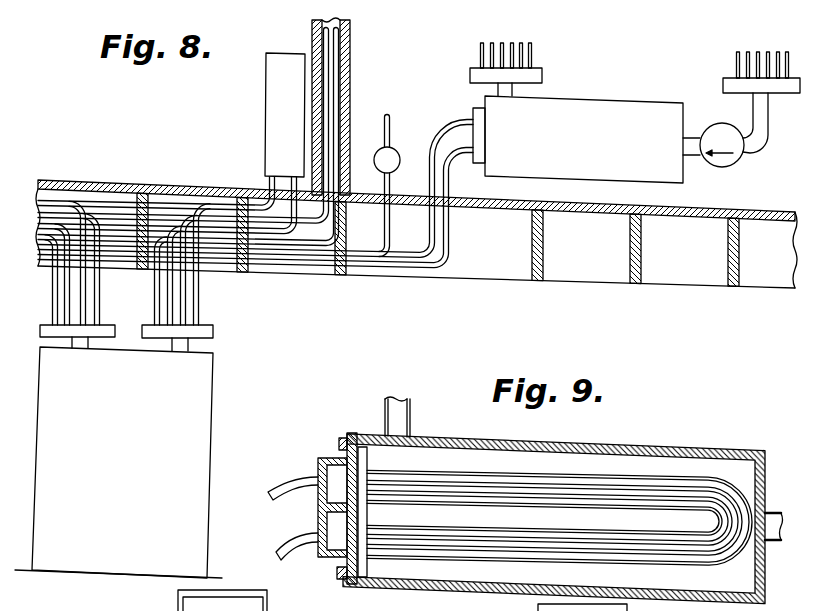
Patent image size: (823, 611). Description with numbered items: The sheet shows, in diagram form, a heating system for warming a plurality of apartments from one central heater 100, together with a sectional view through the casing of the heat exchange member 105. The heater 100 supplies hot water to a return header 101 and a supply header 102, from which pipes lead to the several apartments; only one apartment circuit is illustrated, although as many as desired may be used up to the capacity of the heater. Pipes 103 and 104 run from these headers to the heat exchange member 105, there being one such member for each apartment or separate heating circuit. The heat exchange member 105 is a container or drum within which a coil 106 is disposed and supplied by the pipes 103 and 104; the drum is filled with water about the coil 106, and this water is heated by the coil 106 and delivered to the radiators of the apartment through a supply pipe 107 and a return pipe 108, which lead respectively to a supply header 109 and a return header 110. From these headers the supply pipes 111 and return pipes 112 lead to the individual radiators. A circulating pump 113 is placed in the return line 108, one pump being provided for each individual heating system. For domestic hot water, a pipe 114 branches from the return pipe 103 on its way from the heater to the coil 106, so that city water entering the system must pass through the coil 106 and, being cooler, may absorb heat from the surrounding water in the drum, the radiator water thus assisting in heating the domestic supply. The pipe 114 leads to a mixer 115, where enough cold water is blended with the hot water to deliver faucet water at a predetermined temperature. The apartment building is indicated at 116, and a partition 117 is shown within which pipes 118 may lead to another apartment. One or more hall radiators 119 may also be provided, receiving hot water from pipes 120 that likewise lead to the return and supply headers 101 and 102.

In FIG. 8, the heater 100 is at (200, 412).
In FIG. 8, the return header 101 is at (42, 325).
In FIG. 8, the supply header 102 is at (213, 333).
In FIG. 8, the return pipe 103 is at (428, 240).
In FIG. 9, the return pipe 103 is at (282, 487).
In FIG. 8, the pipe 104 is at (205, 297).
In FIG. 9, the pipe 104 is at (280, 550).
In FIG. 8, the heat exchange member 105 is at (580, 146).
In FIG. 9, the heat exchange member 105 is at (615, 449).
In FIG. 9, the coil 106 is at (470, 472).
In FIG. 8, the supply pipe 107 is at (498, 89).
In FIG. 9, the supply pipe 107 is at (395, 406).
In FIG. 8, the return pipe 108 is at (768, 116).
In FIG. 9, the return pipe 108 is at (773, 511).
In FIG. 8, the supply header 109 is at (472, 73).
In FIG. 8, the return header 110 is at (724, 85).
In FIG. 8, the supply pipes 111 is at (532, 52).
In FIG. 8, the return pipes 112 is at (737, 63).
In FIG. 8, the circulating pump 113 is at (728, 163).
In FIG. 8, the pipe 114 is at (385, 189).
In FIG. 8, the mixer 115 is at (396, 157).
In FIG. 8, the apartment building 116 is at (117, 183).
In FIG. 8, the partition 117 is at (312, 46).
In FIG. 8, the pipes 118 is at (336, 72).
In FIG. 8, the hall radiator 119 is at (270, 123).
In FIG. 8, the pipes 120 is at (268, 186).